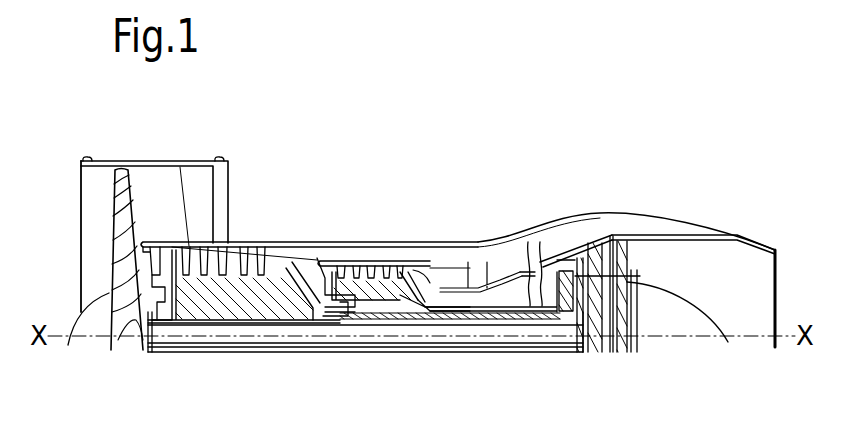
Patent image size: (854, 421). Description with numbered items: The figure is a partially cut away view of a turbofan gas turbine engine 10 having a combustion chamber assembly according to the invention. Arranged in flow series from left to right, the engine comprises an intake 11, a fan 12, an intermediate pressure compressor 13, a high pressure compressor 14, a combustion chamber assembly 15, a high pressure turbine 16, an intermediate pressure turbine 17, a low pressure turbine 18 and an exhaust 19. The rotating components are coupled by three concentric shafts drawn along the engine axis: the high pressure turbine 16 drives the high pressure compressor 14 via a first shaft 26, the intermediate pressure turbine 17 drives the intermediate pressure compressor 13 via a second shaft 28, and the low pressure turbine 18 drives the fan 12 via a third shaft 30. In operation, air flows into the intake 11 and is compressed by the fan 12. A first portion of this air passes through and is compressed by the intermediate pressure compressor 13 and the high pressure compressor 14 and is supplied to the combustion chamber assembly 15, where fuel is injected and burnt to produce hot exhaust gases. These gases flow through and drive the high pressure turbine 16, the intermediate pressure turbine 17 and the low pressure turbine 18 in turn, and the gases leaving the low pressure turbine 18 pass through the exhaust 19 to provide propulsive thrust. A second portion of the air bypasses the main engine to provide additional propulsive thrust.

The turbofan gas turbine engine 10 is at (359, 183).
The intake 11 is at (70, 242).
The fan 12 is at (131, 190).
The intermediate pressure compressor 13 is at (230, 287).
The high pressure compressor 14 is at (367, 265).
The combustion chamber assembly 15 is at (478, 246).
The high pressure turbine 16 is at (528, 241).
The intermediate pressure turbine 17 is at (564, 254).
The low pressure turbine 18 is at (626, 249).
The exhaust 19 is at (757, 307).
The first shaft 26 is at (510, 312).
The second shaft 28 is at (325, 318).
The third shaft 30 is at (226, 347).